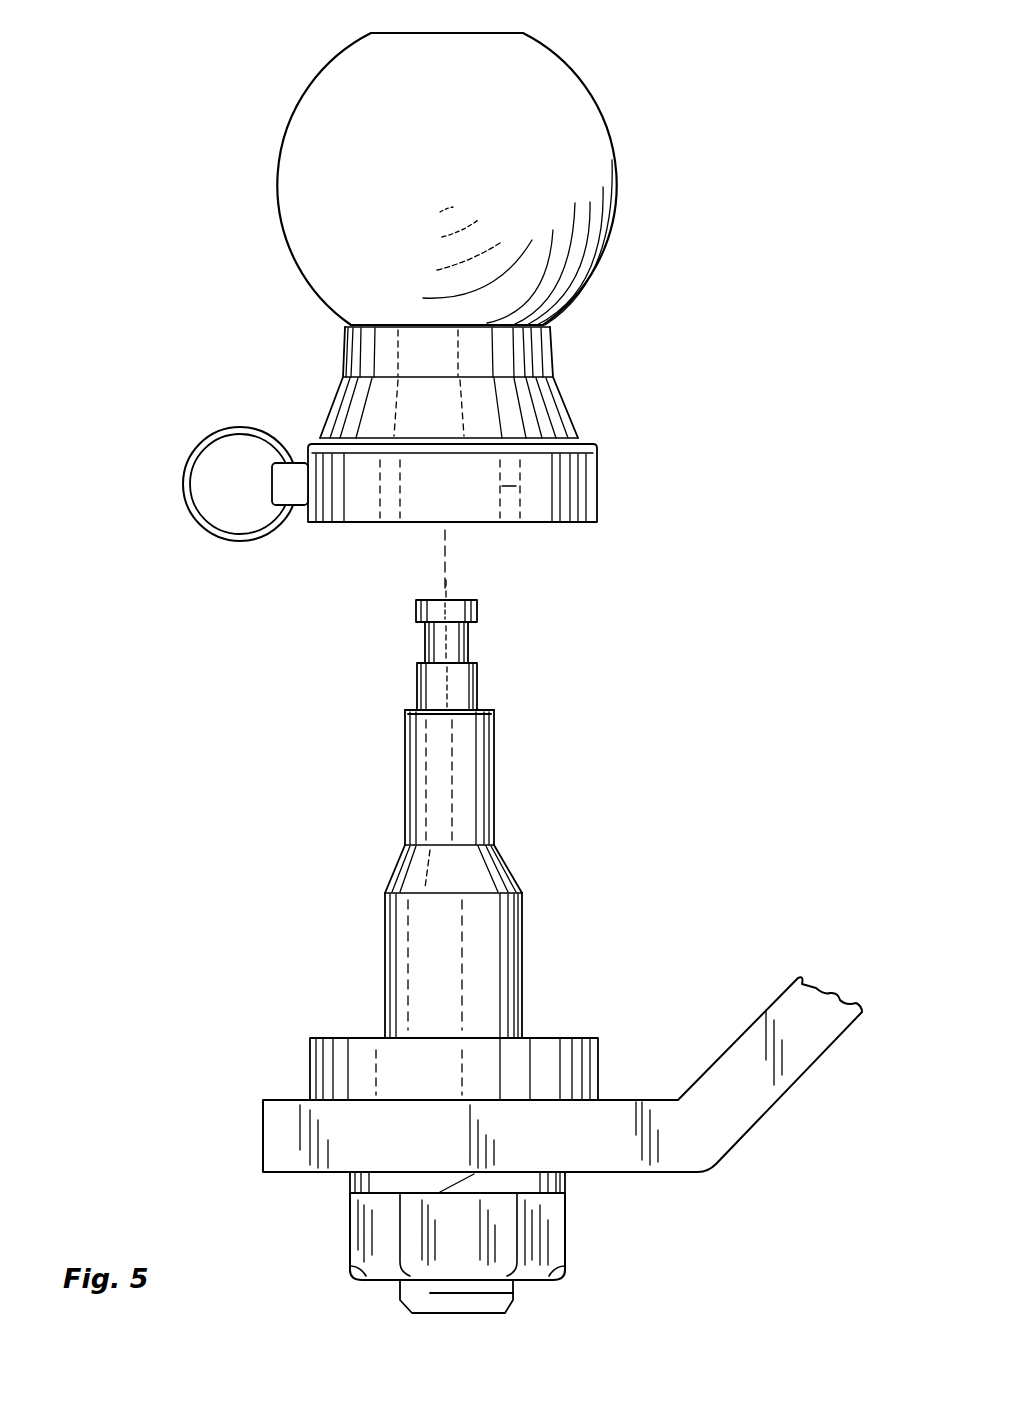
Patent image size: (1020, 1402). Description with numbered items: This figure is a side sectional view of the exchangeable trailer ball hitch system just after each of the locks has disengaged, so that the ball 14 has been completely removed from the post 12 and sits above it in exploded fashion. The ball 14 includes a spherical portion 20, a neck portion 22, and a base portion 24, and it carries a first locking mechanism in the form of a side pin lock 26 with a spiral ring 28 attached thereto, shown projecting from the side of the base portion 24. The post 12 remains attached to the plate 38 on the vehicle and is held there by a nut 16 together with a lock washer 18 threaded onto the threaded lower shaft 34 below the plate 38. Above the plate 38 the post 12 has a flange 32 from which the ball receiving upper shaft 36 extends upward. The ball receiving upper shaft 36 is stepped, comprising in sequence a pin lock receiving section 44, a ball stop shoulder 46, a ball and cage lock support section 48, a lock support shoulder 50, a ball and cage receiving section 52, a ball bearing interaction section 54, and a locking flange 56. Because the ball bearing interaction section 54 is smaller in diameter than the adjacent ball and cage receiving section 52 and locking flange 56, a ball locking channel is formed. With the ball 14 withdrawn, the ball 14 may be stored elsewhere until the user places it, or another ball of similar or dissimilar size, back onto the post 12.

The post 12 is at (296, 966).
The ball 14 is at (236, 259).
The nut 16 is at (588, 1239).
The lock washer 18 is at (598, 1188).
The spherical portion 20 is at (682, 30).
The neck portion 22 is at (682, 322).
The base portion 24 is at (682, 436).
The side pin lock 26 is at (297, 494).
The spiral ring 28 is at (184, 510).
The flange 32 is at (536, 1052).
The threaded lower shaft 34 is at (511, 1290).
The ball receiving upper shaft 36 is at (361, 605).
The plate 38 is at (248, 1137).
The pin lock receiving section 44 is at (502, 927).
The ball stop shoulder 46 is at (516, 856).
The ball and cage lock support section 48 is at (497, 760).
The lock support shoulder 50 is at (502, 705).
The ball and cage receiving section 52 is at (479, 674).
The ball bearing interaction section 54 is at (470, 637).
The locking flange 56 is at (479, 604).